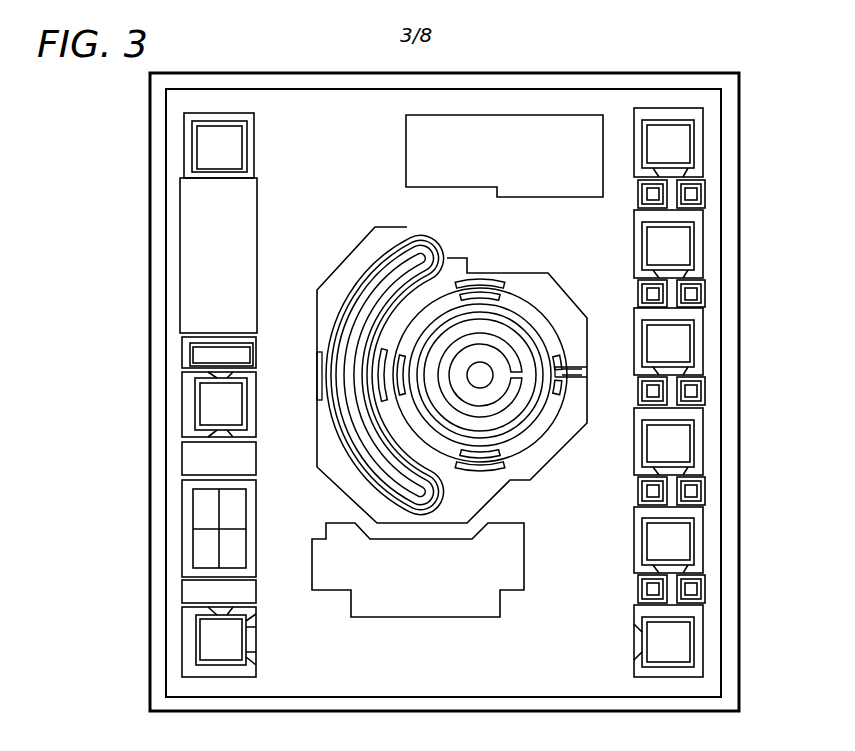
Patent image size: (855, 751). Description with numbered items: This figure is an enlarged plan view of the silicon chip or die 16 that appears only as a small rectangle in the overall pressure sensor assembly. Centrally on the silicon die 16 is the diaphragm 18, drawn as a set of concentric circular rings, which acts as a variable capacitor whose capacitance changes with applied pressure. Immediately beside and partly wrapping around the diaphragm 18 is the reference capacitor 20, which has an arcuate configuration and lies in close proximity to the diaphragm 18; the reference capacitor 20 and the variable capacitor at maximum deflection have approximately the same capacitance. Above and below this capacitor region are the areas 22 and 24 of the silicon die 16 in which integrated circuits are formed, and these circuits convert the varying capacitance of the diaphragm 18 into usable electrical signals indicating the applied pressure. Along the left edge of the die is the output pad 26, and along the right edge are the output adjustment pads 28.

The silicon die 16 is at (122, 334).
The diaphragm 18 is at (503, 333).
The reference capacitor 20 is at (361, 322).
The area 22 is at (517, 138).
The area 24 is at (380, 590).
The output pad 26 is at (220, 406).
The output adjustment pads 28 is at (677, 150).